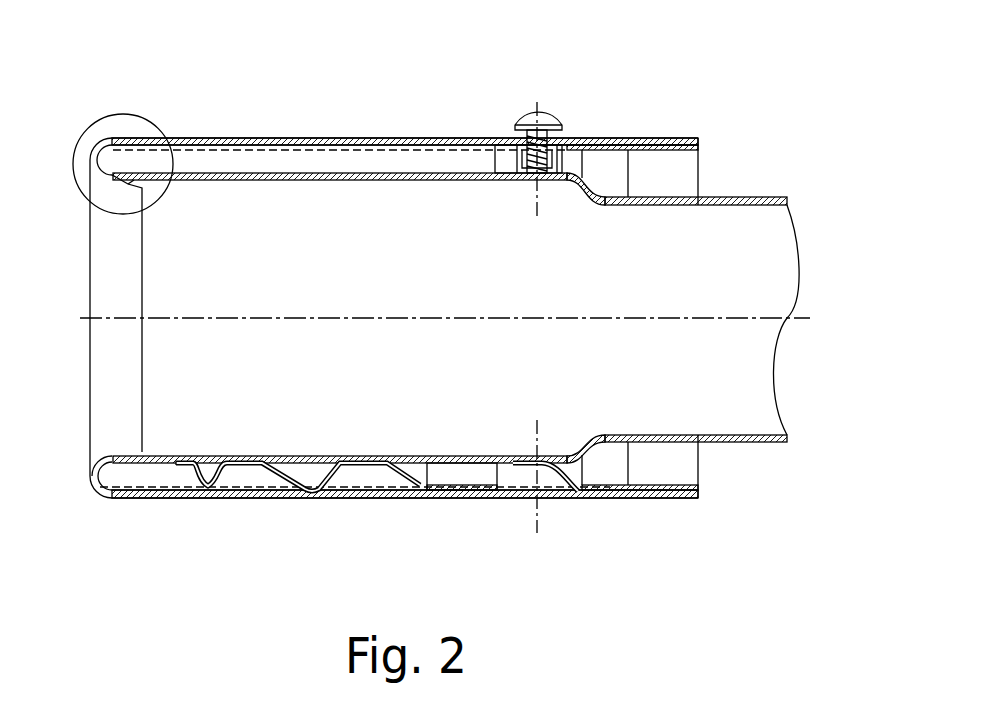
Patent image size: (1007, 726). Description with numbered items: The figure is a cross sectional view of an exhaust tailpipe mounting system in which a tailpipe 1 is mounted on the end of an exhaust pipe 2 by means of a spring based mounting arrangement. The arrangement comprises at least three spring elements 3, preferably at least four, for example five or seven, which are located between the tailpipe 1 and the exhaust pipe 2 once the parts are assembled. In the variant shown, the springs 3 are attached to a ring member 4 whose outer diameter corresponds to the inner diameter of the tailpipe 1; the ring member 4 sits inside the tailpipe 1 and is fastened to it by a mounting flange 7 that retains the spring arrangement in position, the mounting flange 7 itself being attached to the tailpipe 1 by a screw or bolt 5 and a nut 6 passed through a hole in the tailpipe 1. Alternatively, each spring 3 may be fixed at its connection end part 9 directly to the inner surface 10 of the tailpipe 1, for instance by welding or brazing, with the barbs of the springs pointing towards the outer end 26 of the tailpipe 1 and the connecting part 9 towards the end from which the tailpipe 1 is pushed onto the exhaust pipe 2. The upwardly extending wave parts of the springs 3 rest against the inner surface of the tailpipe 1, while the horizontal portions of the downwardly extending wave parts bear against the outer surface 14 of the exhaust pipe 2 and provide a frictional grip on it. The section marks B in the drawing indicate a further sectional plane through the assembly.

The tailpipe 1 is at (655, 138).
The exhaust pipe 2 is at (751, 197).
The spring element 3 is at (308, 494).
The ring member 4 is at (447, 470).
The screw 5 is at (520, 125).
The nut 6 is at (522, 162).
The mounting flange 7 is at (603, 162).
The connection end part 9 is at (482, 492).
The inner surface 10 is at (128, 497).
The outer surface 14 is at (177, 464).
The outer end 26 is at (118, 114).
The section line B is at (537, 319).